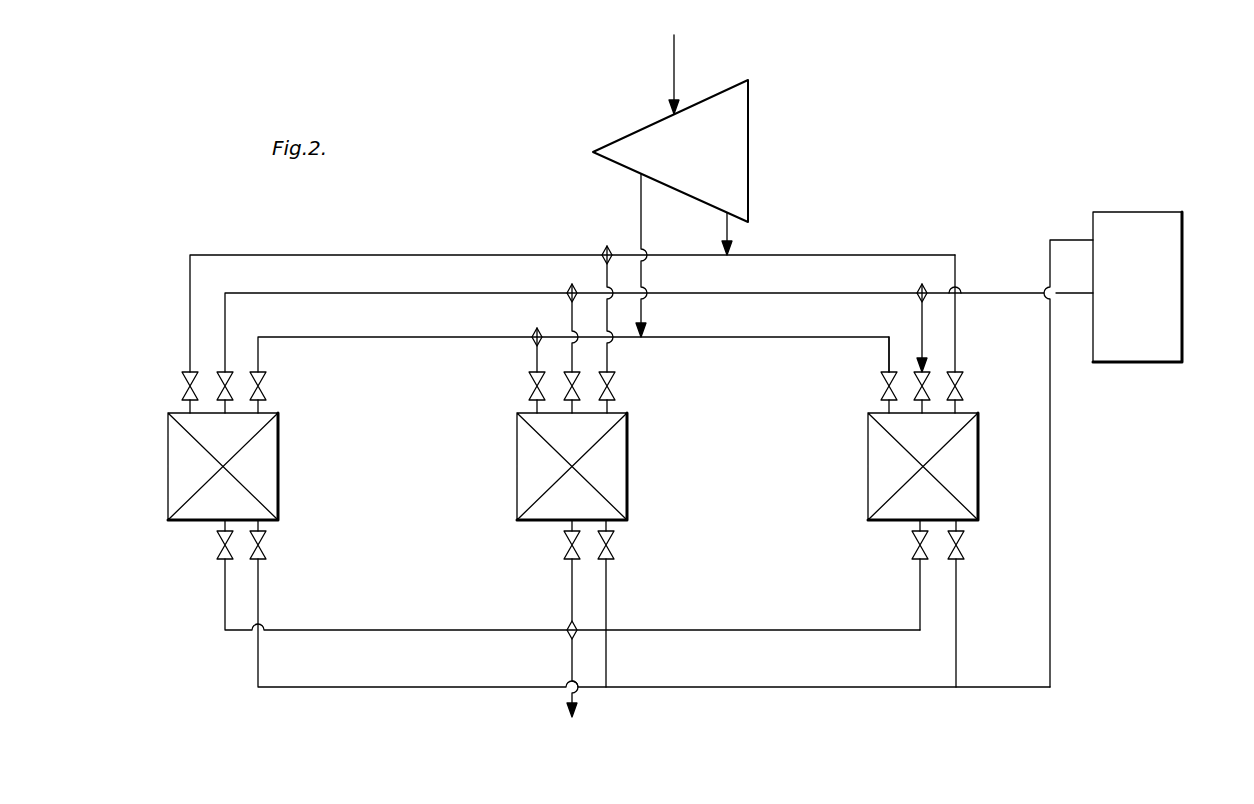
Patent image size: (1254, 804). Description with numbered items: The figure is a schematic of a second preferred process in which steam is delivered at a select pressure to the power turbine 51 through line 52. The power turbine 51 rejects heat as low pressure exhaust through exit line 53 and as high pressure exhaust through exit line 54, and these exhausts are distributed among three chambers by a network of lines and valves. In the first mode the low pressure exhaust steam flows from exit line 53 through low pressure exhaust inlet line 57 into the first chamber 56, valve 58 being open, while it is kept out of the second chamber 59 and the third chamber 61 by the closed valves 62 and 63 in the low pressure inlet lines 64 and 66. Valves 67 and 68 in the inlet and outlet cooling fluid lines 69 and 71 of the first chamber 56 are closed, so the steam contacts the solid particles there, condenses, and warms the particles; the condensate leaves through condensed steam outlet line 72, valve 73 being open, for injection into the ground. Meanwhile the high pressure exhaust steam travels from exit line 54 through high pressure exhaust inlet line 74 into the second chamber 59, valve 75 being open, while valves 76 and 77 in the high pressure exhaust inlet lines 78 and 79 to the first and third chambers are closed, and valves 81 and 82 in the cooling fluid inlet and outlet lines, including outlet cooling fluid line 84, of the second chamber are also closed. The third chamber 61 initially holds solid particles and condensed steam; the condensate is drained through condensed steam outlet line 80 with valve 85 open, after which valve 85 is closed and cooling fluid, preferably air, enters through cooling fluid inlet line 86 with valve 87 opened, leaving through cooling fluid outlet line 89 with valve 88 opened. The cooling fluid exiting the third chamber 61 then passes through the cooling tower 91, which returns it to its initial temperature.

The power turbine 51 is at (674, 70).
The line 52 is at (742, 118).
The exit line 53 is at (727, 235).
The exit line 54 is at (641, 240).
The first chamber 56 is at (868, 467).
The low pressure exhaust inlet line 57 is at (955, 270).
The valve 58 is at (963, 375).
The second chamber 59 is at (627, 470).
The third chamber 61 is at (278, 478).
The valve 62 is at (614, 388).
The valve 63 is at (183, 390).
The low pressure inlet line 64 is at (605, 273).
The low pressure inlet line 66 is at (190, 288).
The valve 67 is at (930, 372).
The valve 68 is at (962, 543).
The inlet cooling fluid line 69 is at (922, 312).
The outlet cooling fluid line 71 is at (956, 608).
The condensed steam outlet line 72 is at (915, 528).
The valve 73 is at (915, 555).
The high pressure exhaust inlet line 74 is at (537, 360).
The valve 75 is at (530, 392).
The valve 76 is at (882, 390).
The valve 77 is at (266, 387).
The high pressure exhaust inlet line 78 is at (889, 358).
The high pressure exhaust inlet line 79 is at (258, 357).
The condensed steam outlet line 80 is at (218, 530).
The valve 81 is at (572, 380).
The valve 82 is at (612, 536).
The outlet cooling fluid line 84 is at (608, 598).
The valve 85 is at (218, 557).
The cooling fluid inlet line 86 is at (225, 312).
The valve 87 is at (225, 375).
The valve 88 is at (264, 542).
The cooling fluid outlet line 89 is at (258, 665).
The cooling tower 91 is at (1182, 255).